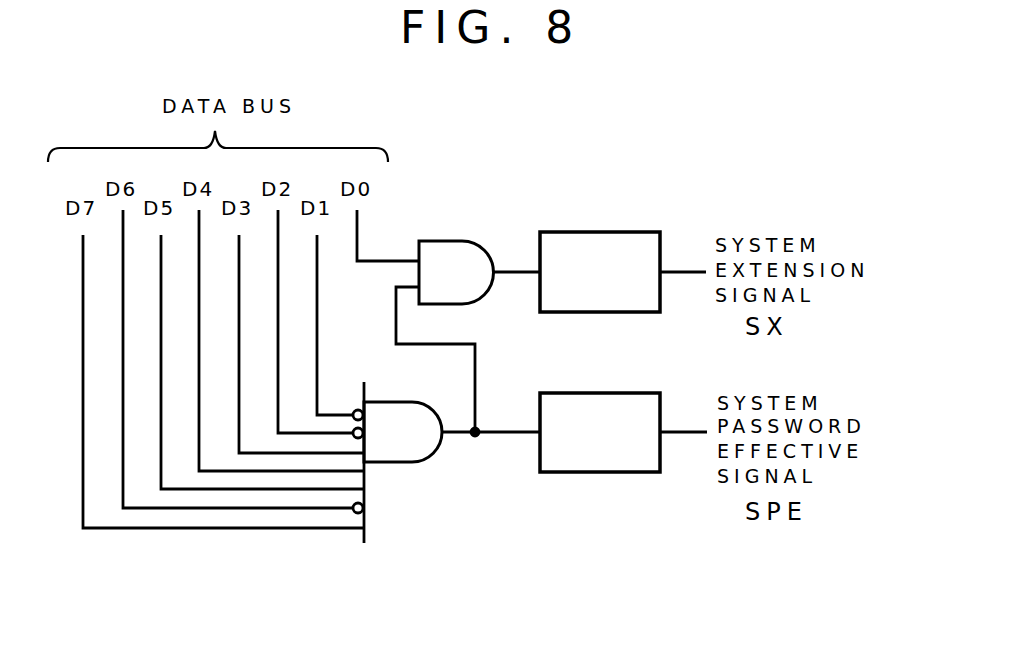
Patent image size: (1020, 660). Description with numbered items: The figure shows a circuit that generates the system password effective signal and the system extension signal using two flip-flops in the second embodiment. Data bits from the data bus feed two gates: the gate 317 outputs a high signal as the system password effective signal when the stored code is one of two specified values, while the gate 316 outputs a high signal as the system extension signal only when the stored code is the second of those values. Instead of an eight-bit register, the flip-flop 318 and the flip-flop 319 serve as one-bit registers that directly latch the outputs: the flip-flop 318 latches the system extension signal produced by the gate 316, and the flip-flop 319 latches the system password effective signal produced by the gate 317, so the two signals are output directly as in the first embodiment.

The gate 316 is at (457, 250).
The gate 317 is at (403, 458).
The flip-flop 318 is at (605, 232).
The flip-flop 319 is at (631, 472).